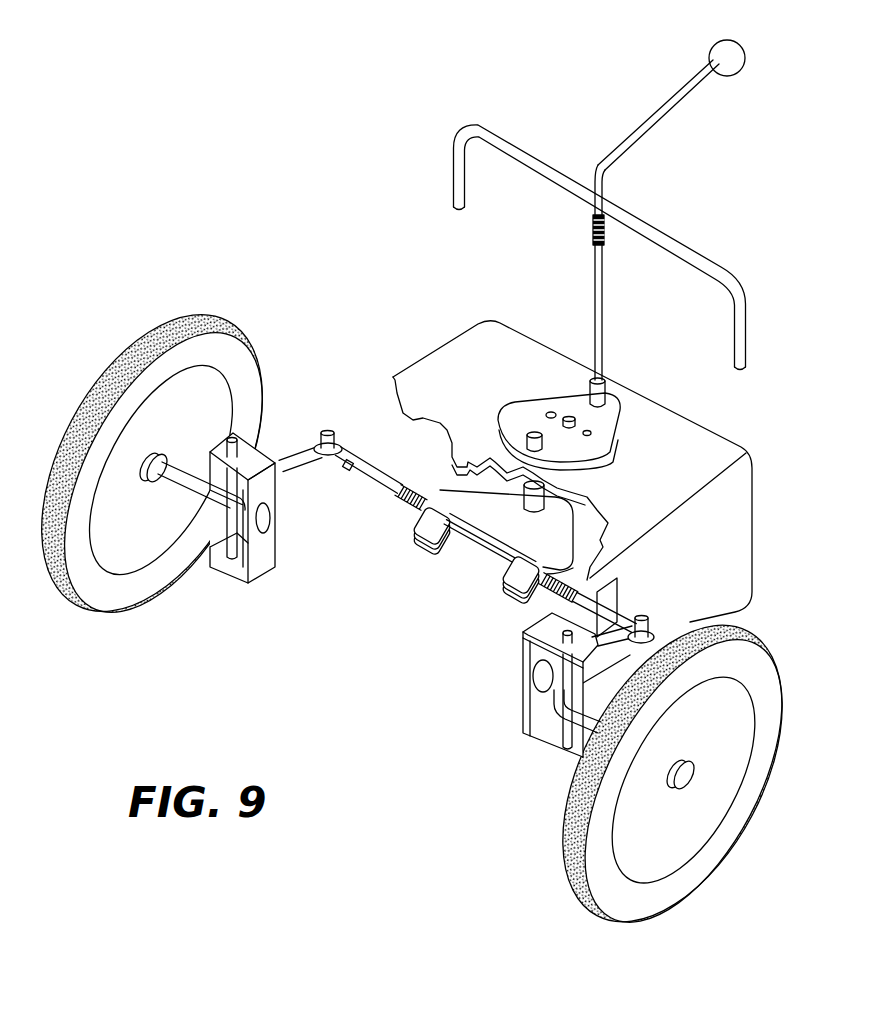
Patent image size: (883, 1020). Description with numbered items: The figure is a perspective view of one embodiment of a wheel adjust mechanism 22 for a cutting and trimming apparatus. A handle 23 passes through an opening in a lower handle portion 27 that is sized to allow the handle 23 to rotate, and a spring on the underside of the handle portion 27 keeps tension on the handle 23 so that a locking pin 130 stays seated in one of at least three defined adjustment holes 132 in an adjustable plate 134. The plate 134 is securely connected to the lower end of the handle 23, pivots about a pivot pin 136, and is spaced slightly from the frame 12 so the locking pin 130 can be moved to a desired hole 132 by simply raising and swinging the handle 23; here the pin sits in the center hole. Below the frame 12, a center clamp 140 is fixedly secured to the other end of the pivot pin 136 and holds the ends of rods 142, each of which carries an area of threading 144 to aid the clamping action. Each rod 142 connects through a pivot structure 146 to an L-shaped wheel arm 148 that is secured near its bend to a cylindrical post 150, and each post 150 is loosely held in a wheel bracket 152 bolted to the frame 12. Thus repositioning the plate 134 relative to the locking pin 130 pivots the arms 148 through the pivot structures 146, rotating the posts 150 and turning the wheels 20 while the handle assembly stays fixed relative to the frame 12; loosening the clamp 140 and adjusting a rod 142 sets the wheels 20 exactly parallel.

The frame 12 is at (681, 497).
The wheels 20 is at (131, 360).
The wheel adjust mechanism 22 is at (588, 419).
The handle 23 is at (673, 103).
The lower handle portion 27 is at (746, 304).
The locking pin 130 is at (571, 418).
The adjustment holes 132 is at (592, 433).
The adjustable plate 134 is at (578, 455).
The pivot pin 136 is at (533, 432).
The center clamp 140 is at (568, 543).
The rods 142 is at (381, 480).
The threading 144 is at (510, 560).
The pivot structure 146 is at (327, 430).
The wheel arm 148 is at (300, 462).
The cylindrical post 150 is at (232, 558).
The wheel bracket 152 is at (270, 560).